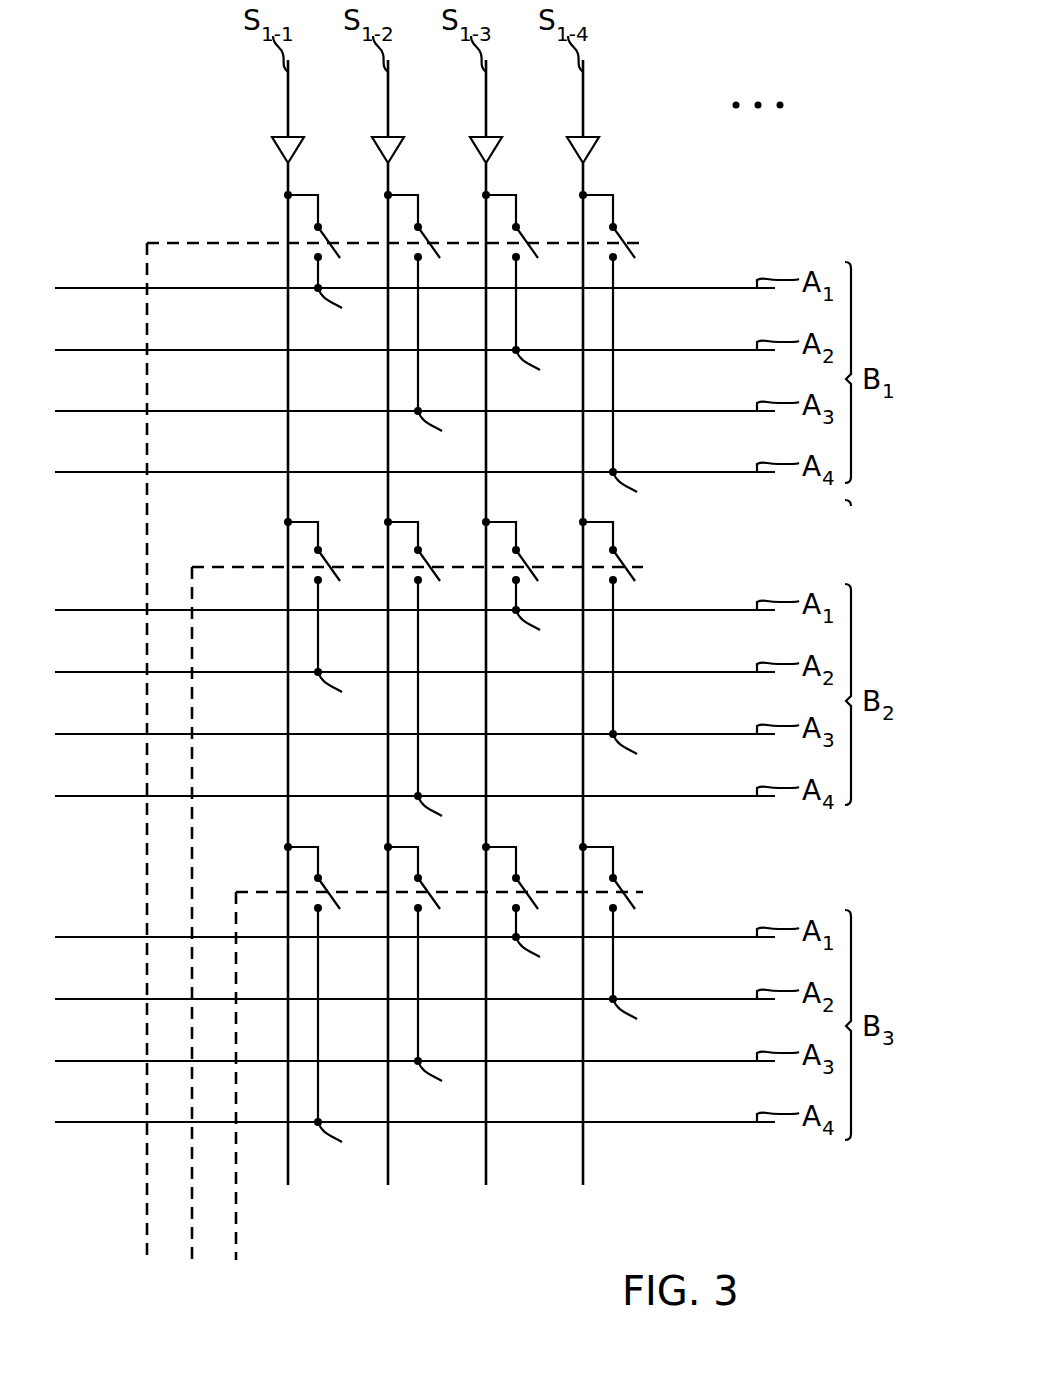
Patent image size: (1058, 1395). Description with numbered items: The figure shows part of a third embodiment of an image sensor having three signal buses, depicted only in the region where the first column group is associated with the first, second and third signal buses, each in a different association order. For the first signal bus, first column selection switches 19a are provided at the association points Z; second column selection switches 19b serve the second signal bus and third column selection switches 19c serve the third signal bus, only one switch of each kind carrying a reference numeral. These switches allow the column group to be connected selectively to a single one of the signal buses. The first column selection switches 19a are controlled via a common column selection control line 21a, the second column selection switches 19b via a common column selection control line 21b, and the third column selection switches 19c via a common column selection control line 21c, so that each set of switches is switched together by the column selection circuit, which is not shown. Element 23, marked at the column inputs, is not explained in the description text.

The first column selection switches 19a is at (339, 228).
The second column selection switches 19b is at (339, 563).
The third column selection switches 19c is at (339, 885).
The common column selection control line 21a is at (148, 1262).
The common column selection control line 21b is at (192, 1262).
The common column selection control line 21c is at (236, 1262).
The buffer / inverter 23 is at (590, 147).